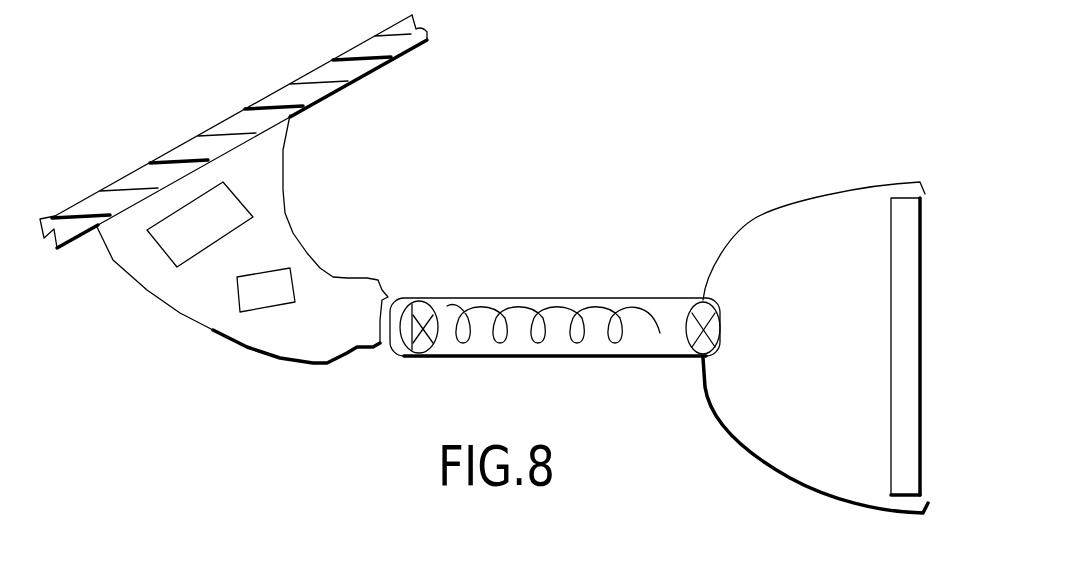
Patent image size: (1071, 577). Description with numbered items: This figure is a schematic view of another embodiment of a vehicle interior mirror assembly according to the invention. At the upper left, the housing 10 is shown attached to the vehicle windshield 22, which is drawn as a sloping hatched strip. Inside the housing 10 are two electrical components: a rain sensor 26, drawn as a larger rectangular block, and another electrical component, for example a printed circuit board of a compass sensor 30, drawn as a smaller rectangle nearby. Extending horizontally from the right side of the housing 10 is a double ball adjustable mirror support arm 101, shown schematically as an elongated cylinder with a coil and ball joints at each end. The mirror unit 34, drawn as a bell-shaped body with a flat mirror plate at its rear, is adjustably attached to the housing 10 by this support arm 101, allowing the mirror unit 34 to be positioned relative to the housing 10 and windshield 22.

The housing 10 is at (275, 228).
The vehicle windshield 22 is at (380, 67).
The rain sensor 26 is at (180, 243).
The compass sensor 30 is at (263, 297).
The mirror unit 34 is at (780, 208).
The double ball adjustable mirror support arm 101 is at (562, 298).